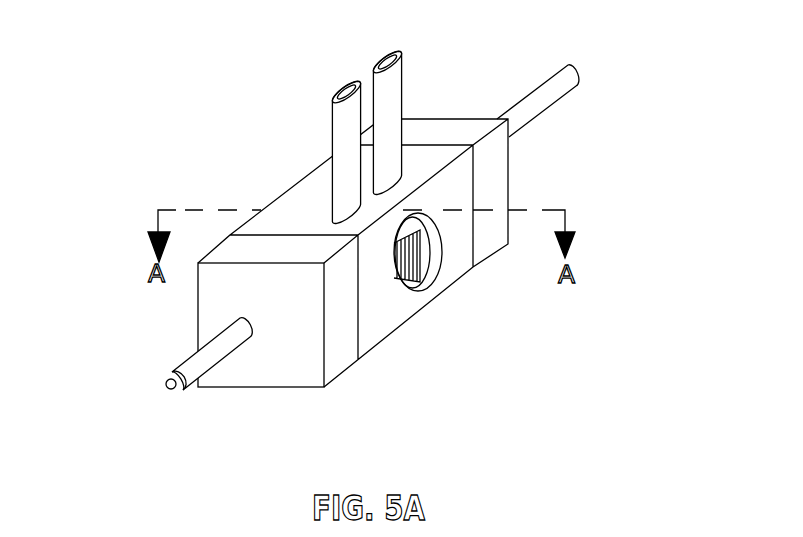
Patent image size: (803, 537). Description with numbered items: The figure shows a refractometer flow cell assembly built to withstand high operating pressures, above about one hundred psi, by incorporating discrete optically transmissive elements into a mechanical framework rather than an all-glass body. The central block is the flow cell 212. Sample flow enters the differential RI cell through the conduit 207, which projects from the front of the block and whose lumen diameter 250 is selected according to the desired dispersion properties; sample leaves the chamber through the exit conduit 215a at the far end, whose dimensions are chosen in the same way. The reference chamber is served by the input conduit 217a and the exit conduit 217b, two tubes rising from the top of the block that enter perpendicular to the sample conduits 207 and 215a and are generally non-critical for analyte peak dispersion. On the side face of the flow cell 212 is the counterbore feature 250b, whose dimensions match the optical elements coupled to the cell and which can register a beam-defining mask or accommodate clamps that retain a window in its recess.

The flow cell 212 is at (458, 182).
The conduit 207 is at (184, 349).
The exit conduit 215a is at (568, 79).
The input conduit 217a is at (329, 140).
The exit conduit 217b is at (408, 66).
The lumen diameter 250 is at (165, 396).
The counterbore feature 250b is at (431, 300).